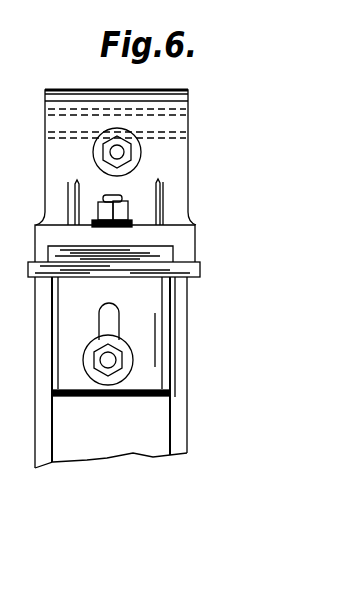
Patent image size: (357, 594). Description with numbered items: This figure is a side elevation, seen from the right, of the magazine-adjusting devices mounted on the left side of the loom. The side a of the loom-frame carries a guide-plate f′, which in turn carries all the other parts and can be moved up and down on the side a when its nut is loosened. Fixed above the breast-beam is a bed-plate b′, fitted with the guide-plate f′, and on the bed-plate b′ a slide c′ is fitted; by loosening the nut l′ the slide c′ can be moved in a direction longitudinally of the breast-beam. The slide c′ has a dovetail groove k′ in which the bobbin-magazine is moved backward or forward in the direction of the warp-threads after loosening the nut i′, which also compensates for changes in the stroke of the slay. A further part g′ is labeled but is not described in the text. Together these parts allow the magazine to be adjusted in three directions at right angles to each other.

The side of the loom-frame a is at (170, 422).
The bed-plate b′ is at (200, 272).
The slide c′ is at (192, 237).
The guide-plate f′ is at (163, 323).
The slot g′ is at (108, 313).
The nut i′ is at (122, 153).
The dovetail groove k′ is at (182, 118).
The nut l′ is at (128, 202).